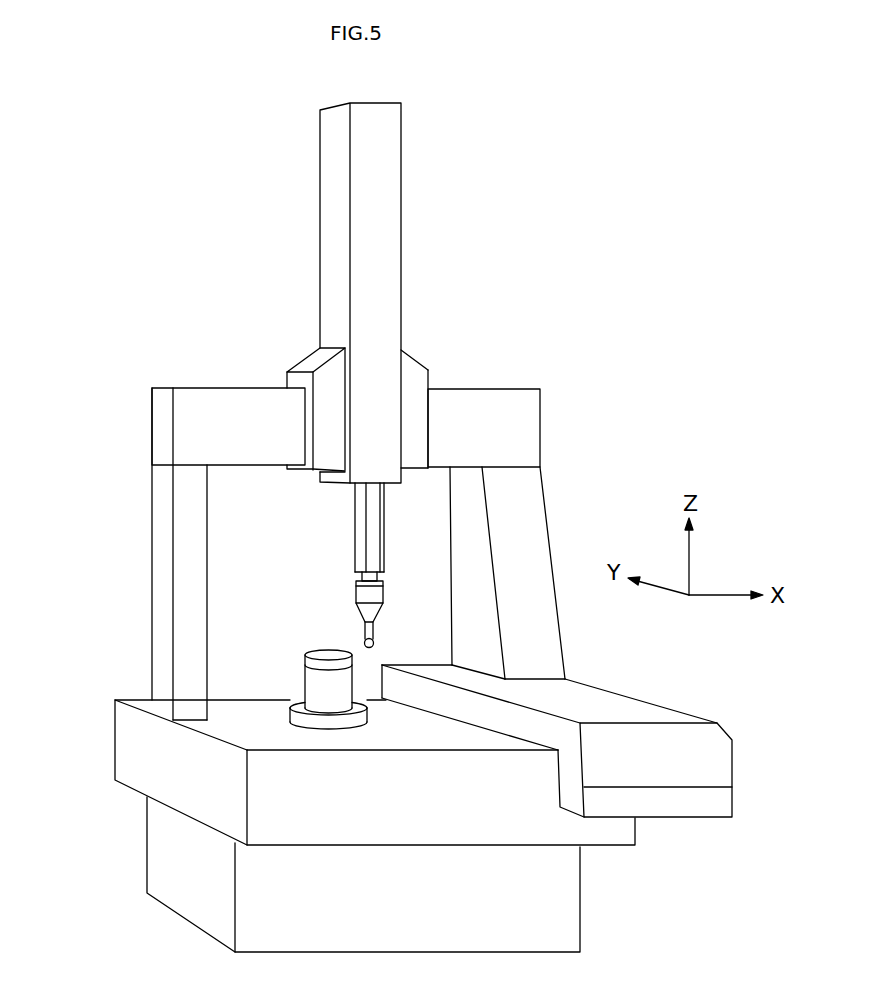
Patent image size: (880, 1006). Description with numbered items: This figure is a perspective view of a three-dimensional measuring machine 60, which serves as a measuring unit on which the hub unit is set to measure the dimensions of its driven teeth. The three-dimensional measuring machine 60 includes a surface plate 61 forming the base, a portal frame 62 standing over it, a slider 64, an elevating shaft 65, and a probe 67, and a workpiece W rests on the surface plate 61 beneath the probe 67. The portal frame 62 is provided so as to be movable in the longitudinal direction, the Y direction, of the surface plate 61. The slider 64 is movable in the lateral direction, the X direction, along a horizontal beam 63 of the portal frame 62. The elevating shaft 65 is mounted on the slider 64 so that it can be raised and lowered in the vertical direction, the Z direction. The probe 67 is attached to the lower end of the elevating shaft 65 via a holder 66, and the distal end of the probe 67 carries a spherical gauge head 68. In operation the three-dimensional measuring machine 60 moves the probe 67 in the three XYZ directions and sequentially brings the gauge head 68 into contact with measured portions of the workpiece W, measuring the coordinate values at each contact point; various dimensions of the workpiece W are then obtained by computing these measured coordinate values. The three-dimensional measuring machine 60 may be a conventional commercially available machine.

The three-dimensional measuring machine 60 is at (530, 341).
The surface plate 61 is at (243, 731).
The portal frame 62 is at (143, 461).
The horizontal beam 63 is at (233, 407).
The slider 64 is at (415, 372).
The elevating shaft 65 is at (353, 512).
The holder 66 is at (355, 591).
The probe 67 is at (375, 630).
The spherical gauge head 68 is at (363, 647).
The workpiece W is at (291, 672).